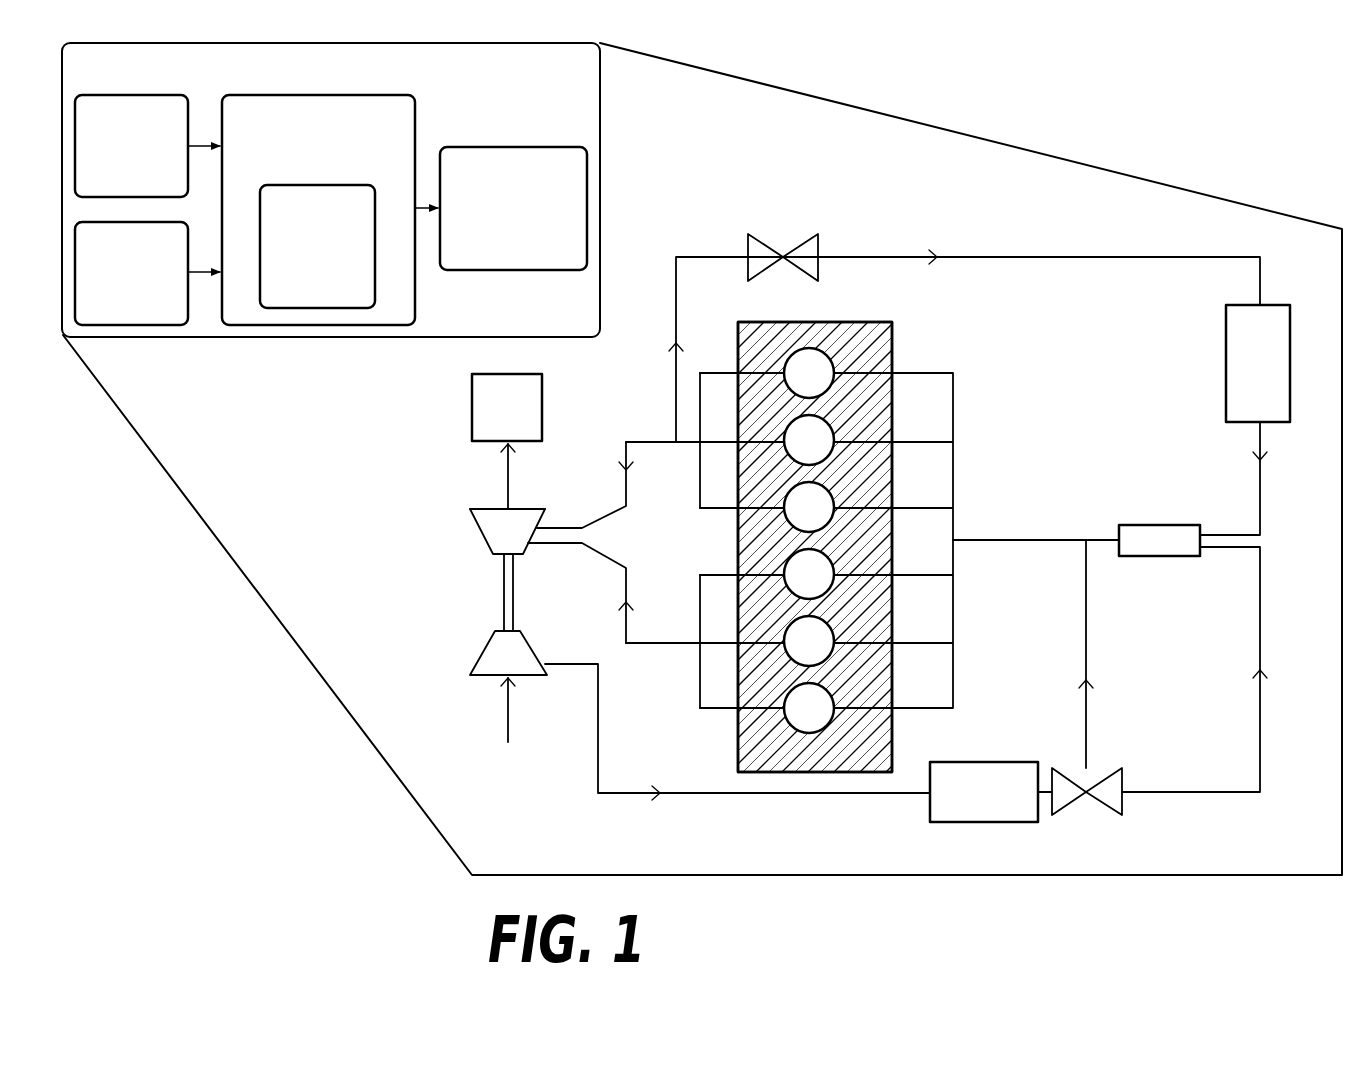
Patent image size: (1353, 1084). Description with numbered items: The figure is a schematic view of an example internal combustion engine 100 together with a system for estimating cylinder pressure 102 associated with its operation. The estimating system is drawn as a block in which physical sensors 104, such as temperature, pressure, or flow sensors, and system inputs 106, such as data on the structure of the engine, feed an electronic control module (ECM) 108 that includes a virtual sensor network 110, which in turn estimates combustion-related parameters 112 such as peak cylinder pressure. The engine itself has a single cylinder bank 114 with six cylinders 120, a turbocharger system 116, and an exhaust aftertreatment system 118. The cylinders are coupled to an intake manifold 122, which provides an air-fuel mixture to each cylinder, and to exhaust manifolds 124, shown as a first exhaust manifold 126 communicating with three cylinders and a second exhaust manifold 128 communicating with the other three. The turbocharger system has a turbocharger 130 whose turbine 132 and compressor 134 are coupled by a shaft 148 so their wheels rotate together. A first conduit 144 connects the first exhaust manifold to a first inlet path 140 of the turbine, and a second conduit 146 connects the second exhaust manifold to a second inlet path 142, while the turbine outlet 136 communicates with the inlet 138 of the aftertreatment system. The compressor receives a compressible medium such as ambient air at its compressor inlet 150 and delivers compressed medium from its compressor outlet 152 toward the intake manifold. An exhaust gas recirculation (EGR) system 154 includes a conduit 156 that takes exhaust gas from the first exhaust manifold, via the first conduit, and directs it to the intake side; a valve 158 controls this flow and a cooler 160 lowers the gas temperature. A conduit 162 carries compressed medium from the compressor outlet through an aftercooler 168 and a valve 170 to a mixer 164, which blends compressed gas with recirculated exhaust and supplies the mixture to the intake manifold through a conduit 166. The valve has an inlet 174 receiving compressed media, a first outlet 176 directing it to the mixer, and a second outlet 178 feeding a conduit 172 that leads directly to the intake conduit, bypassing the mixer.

The internal combustion engine 100 is at (684, 222).
The system for estimating cylinder pressure 102 is at (560, 85).
The physical sensors 104 is at (148, 183).
The system inputs 106 is at (148, 310).
The electronic control module (ECM) 108 is at (362, 178).
The virtual sensor network 110 is at (335, 295).
The combustion-related parameters 112 is at (530, 261).
The cylinder bank 114 is at (895, 325).
The turbocharger system 116 is at (493, 745).
The exhaust aftertreatment system 118 is at (470, 400).
The cylinders 120 is at (822, 384).
The intake manifold 122 is at (955, 482).
The exhaust manifolds 124 is at (614, 432).
The first exhaust manifold 126 is at (700, 490).
The second exhaust manifold 128 is at (700, 665).
The turbocharger 130 is at (470, 592).
The turbine 132 is at (480, 525).
The compressor 134 is at (480, 655).
The turbine outlet 136 is at (505, 508).
The inlet to exhaust aftertreatment system 138 is at (505, 450).
The first inlet path 140 is at (537, 525).
The second inlet path 142 is at (528, 545).
The first conduit 144 is at (618, 457).
The second conduit 146 is at (645, 640).
The shaft 148 is at (513, 618).
The compressor inlet 150 is at (500, 680).
The compressor outlet 152 is at (547, 670).
The exhaust gas recirculation (EGR) system 154 is at (1115, 237).
The conduit 156 is at (676, 292).
The valve 158 is at (805, 238).
The cooler 160 is at (1302, 358).
The conduit 162 is at (1262, 608).
The mixer 164 is at (1157, 525).
The conduit 166 is at (1035, 542).
The aftercooler 168 is at (1008, 823).
The valve 170 is at (1113, 797).
The conduit 172 is at (1088, 622).
The inlet 174 is at (1042, 795).
The first outlet 176 is at (1128, 778).
The second outlet 178 is at (1085, 788).